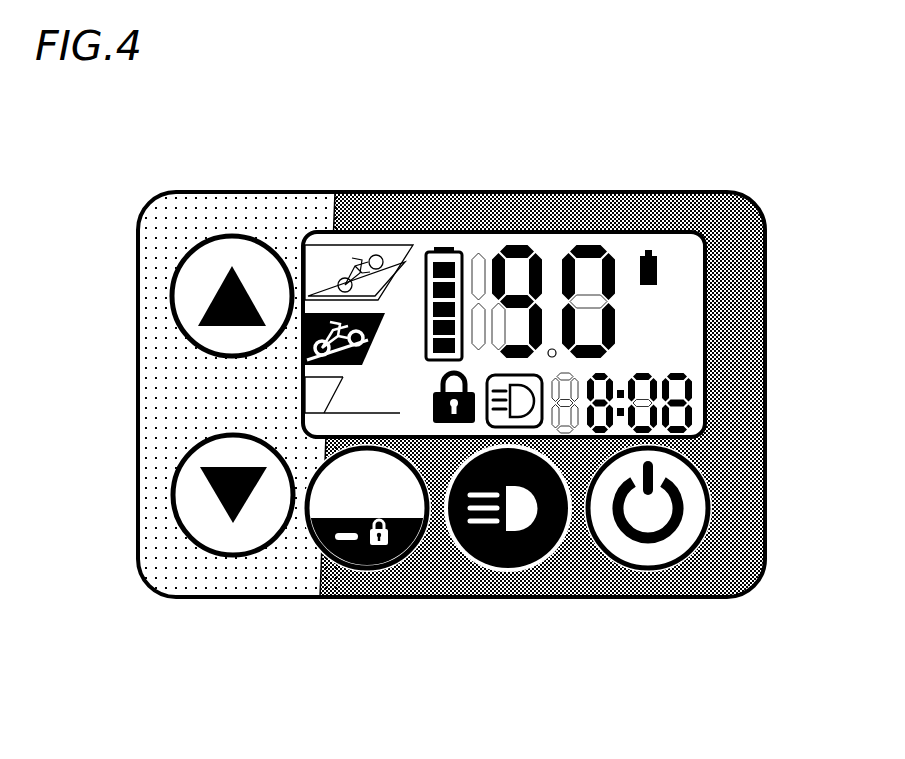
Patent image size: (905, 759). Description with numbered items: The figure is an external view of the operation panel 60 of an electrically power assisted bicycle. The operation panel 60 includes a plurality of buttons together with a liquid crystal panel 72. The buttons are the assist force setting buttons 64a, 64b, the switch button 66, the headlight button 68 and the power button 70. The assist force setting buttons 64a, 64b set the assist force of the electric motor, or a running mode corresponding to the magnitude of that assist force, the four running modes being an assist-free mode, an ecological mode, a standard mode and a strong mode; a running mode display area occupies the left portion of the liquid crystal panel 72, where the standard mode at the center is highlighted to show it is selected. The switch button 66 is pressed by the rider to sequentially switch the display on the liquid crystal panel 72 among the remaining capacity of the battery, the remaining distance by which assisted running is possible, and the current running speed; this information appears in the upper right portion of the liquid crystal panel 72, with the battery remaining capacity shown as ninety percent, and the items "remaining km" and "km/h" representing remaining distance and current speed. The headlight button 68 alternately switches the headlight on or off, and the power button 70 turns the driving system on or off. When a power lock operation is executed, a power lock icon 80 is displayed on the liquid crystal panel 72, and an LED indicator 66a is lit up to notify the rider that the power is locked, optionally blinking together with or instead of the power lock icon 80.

The operation panel 60 is at (716, 628).
The assist force setting button 64a is at (205, 313).
The assist force setting button 64b is at (207, 480).
The switch button 66 is at (325, 560).
The LED indicator 66a is at (347, 541).
The headlight button 68 is at (507, 568).
The power button 70 is at (648, 568).
The liquid crystal panel 72 is at (680, 238).
The power lock icon 80 is at (447, 424).